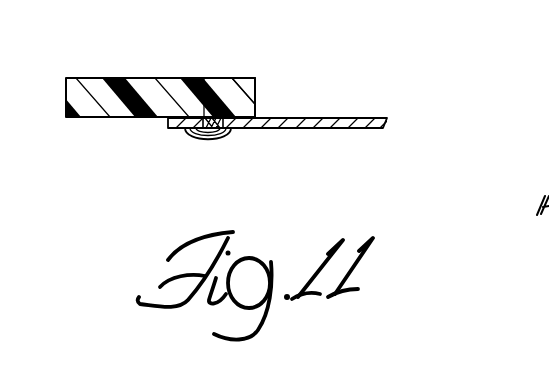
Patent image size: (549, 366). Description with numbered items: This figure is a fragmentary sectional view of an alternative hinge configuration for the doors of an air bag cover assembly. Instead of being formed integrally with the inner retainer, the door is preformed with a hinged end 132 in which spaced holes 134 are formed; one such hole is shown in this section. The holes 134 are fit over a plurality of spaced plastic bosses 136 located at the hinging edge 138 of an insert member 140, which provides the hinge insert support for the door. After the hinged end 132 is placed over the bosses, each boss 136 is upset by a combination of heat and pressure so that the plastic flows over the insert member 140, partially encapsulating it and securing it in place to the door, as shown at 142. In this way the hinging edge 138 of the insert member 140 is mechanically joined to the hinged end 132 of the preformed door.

The hinged end 132 is at (280, 154).
The spaced holes 134 is at (237, 172).
The spaced plastic bosses 136 is at (204, 70).
The hinging edge 138 is at (313, 76).
The insert member 140 is at (169, 58).
The upset boss securing the insert 142 is at (149, 159).